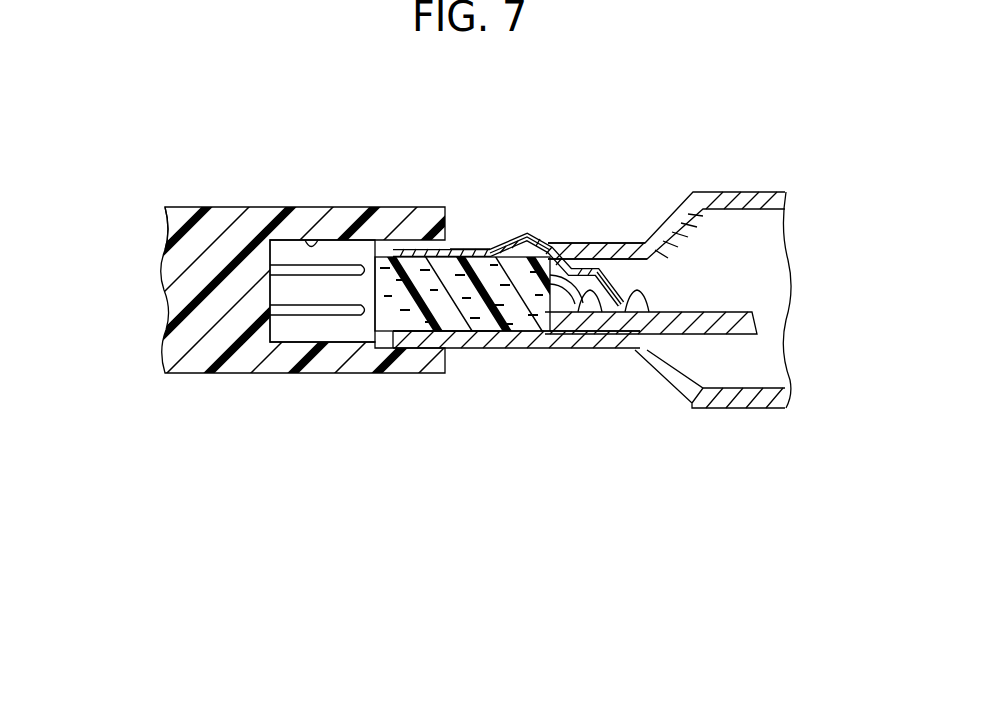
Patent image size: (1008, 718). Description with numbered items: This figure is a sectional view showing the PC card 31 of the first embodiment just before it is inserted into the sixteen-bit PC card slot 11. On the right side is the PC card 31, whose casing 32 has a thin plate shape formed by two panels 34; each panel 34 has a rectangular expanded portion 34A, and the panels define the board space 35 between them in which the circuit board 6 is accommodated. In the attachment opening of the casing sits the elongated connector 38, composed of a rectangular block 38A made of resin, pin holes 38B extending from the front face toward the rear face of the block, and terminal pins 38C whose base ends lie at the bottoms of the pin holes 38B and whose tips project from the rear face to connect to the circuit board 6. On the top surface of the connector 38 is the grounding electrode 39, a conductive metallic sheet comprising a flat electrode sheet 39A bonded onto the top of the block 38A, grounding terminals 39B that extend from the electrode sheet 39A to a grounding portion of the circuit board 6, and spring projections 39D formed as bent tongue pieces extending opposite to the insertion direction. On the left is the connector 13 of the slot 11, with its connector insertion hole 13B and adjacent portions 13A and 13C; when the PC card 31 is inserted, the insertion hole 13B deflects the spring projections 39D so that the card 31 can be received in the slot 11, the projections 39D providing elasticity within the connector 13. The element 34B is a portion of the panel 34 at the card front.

The circuit board 6 is at (745, 325).
The 16-bit PC card slot 11 is at (221, 170).
The connector 13 is at (175, 362).
The block side surface 13A is at (178, 257).
The connector insertion hole 13B is at (316, 246).
The grooves 13C is at (295, 308).
The PC card 31 is at (748, 158).
The casing 32 is at (729, 425).
The panels 34 is at (777, 190).
The rectangular expanded portion 34A is at (770, 398).
The upper housing flange 34B is at (562, 243).
The board space 35 is at (752, 267).
The connector 38 is at (532, 350).
The rectangular block 38A is at (486, 350).
The pin holes 38B is at (396, 376).
The terminal pins 38C is at (572, 350).
The grounding electrode 39 is at (418, 250).
The electrode sheet 39A is at (468, 250).
The grounding terminals 39B is at (620, 350).
The spring projections 39D is at (523, 237).